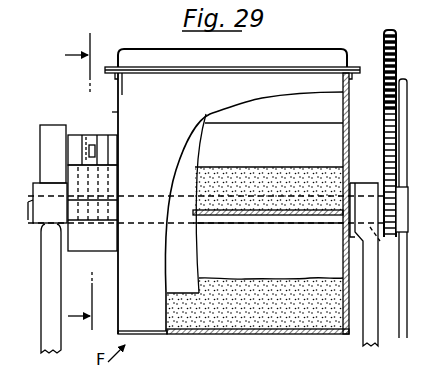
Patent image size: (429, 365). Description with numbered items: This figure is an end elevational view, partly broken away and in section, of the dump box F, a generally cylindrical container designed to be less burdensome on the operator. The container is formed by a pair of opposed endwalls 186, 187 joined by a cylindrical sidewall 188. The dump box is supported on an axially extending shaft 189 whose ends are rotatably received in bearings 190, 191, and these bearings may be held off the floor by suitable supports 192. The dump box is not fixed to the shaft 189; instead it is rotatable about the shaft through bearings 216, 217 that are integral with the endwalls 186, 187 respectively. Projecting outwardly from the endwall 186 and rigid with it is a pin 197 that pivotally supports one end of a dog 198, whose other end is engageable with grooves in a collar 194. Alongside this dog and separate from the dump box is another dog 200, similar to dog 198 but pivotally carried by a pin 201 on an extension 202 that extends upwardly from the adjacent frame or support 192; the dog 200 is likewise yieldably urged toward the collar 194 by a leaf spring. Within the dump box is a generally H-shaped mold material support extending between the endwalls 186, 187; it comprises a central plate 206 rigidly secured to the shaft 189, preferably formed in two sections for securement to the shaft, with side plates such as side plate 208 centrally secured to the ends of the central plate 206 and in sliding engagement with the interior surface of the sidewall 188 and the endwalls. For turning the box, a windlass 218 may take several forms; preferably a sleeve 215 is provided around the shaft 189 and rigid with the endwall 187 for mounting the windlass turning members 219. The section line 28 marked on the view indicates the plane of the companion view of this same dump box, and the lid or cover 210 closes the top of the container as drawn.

The section line 28- 28 is at (73, 189).
The endwall 186 is at (108, 112).
The endwall 187 is at (346, 117).
The cylindrical sidewall 188 is at (167, 121).
The shaft 189 is at (302, 225).
The bearing 190 is at (37, 233).
The bearing 191 is at (357, 185).
The support 192 is at (42, 328).
The collar 194 is at (80, 251).
The pin 197 is at (92, 141).
The dog 198 is at (87, 134).
The dog 200 is at (76, 135).
The pin 201 is at (77, 144).
The extension 202 is at (40, 172).
The central plate 206 is at (255, 216).
The side plate 208 is at (7, 279).
The lid 210 is at (314, 47).
The sleeve 215 is at (393, 147).
The bearing 216 is at (116, 252).
The bearing 217 is at (352, 180).
The windlass 218 is at (397, 338).
The windlass turning members 219 is at (205, 198).